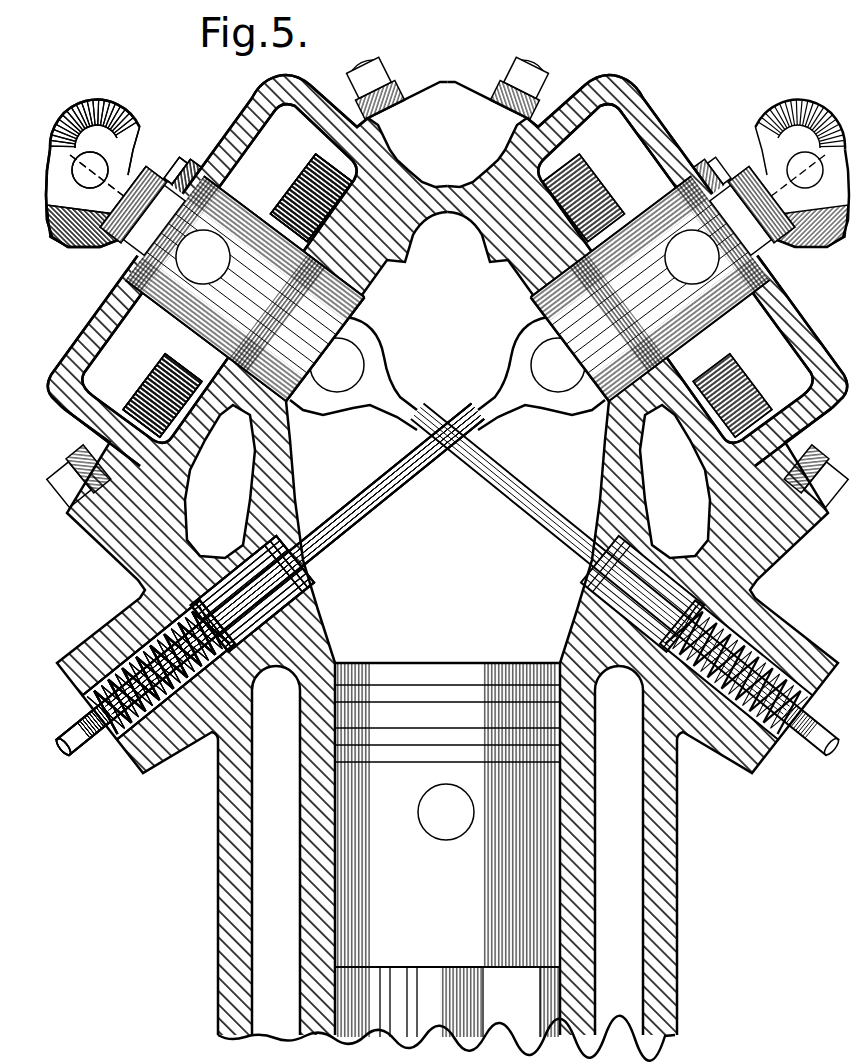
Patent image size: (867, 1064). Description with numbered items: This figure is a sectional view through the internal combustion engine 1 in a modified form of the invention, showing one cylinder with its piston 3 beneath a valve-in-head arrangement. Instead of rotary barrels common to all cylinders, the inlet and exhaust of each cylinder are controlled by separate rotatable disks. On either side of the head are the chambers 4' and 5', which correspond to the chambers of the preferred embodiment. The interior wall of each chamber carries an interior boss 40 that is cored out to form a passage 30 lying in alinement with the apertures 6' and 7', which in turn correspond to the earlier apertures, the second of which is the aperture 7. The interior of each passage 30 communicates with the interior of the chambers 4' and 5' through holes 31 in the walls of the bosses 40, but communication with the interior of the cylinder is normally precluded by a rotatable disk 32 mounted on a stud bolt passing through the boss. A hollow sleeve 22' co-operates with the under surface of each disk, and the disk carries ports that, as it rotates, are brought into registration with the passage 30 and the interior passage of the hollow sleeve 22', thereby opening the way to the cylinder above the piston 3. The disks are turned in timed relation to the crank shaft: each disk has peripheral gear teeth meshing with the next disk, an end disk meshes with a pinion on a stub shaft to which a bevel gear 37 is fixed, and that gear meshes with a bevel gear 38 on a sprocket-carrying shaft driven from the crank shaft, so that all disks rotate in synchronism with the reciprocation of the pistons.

The internal combustion engine 1 is at (672, 930).
The piston 3 is at (453, 665).
The chamber 4' is at (208, 269).
The chamber 5' is at (687, 263).
The aperture 6' is at (220, 281).
The aperture 7 is at (437, 432).
The aperture 7' is at (324, 580).
The hollow sleeve 22' is at (282, 540).
The passage 30 is at (695, 290).
The hole 31 is at (737, 314).
The rotatable disk 32 is at (322, 176).
The bevel gear 37 is at (186, 160).
The bevel gear 38 is at (133, 120).
The interior boss 40 is at (172, 309).